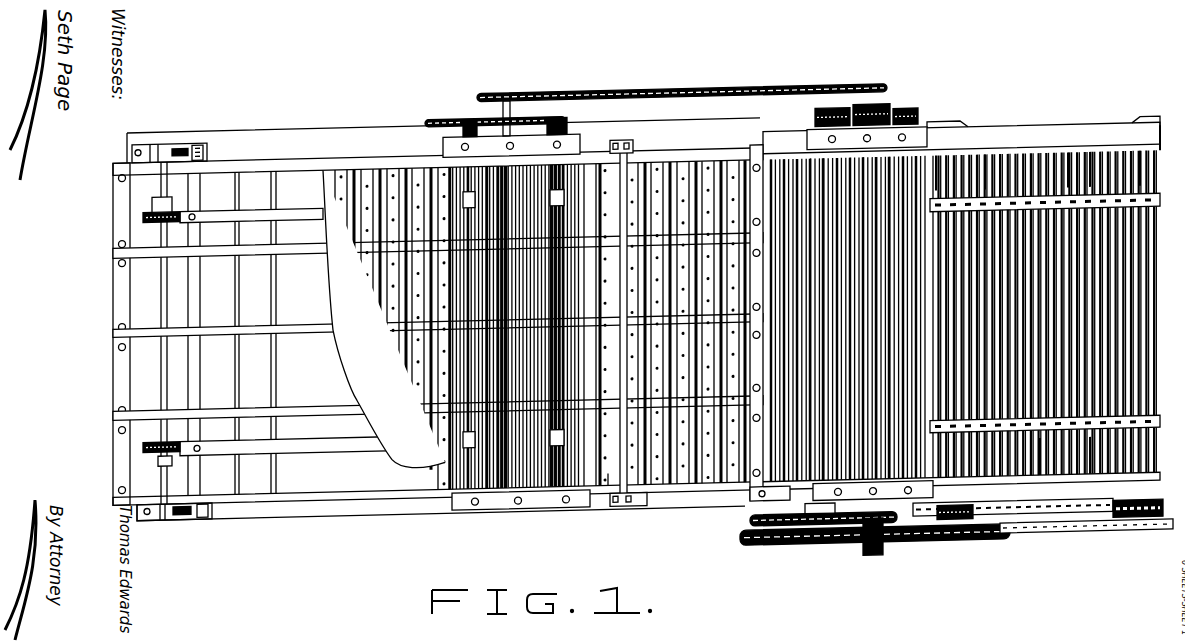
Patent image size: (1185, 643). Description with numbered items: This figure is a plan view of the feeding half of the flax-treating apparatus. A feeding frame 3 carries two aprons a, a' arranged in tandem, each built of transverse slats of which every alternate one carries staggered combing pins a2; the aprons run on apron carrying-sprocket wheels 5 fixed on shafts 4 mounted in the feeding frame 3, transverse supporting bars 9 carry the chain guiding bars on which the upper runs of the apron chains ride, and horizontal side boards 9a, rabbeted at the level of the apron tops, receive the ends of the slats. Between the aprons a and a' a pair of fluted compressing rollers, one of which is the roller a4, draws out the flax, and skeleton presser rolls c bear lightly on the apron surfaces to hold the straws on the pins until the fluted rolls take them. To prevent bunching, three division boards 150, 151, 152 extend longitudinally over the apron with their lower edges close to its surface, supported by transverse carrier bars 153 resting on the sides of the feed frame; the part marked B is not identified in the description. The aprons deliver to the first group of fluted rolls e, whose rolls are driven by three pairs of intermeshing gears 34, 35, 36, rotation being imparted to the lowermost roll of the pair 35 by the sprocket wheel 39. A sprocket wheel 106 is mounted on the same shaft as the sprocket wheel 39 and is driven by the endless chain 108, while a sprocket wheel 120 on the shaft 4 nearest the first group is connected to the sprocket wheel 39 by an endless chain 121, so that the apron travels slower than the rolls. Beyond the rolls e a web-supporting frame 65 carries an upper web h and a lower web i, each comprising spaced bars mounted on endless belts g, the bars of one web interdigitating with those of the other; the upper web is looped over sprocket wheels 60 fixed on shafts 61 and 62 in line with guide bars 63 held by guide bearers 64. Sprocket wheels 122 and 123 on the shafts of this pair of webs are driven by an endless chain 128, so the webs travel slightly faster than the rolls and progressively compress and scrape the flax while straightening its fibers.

The feeding frame 3 is at (203, 150).
The horizontal side boards 9a is at (305, 169).
The apron a is at (686, 279).
The apron a' is at (664, 291).
The combing pins a2 is at (400, 452).
The fluted compressing roller a4 is at (505, 502).
The skeleton presser roll c is at (450, 496).
The transverse carrier bars 153 is at (613, 170).
The sliding bar B is at (290, 216).
The division board 150 is at (298, 256).
The division board 151 is at (295, 330).
The division board 152 is at (300, 412).
The apron carrying-sprocket wheels 5 is at (140, 218).
The shaft 4 is at (163, 377).
The transverse supporting bars 9 is at (196, 298).
The pair of gears 34 is at (820, 125).
The pair of gears 35 is at (855, 122).
The pair of gears 36 is at (893, 137).
The first group of fluted rolls e is at (910, 164).
The shaft 61 is at (938, 170).
The sprocket wheels 60 is at (965, 170).
The guide bearers 64 is at (985, 169).
The upper web h is at (1033, 172).
The lower web i is at (1055, 172).
The guide bars 63 is at (1068, 173).
The endless belts g is at (1090, 174).
The web-supporting frame 65 is at (1140, 170).
The shaft 62 is at (1163, 155).
The sprocket wheel 120 is at (752, 542).
The endless chain 121 is at (822, 541).
The sprocket wheel 39 is at (866, 548).
The sprocket wheel 106 is at (930, 561).
The sprocket wheel 122 is at (985, 541).
The endless chain 128 is at (1038, 533).
The endless chain 108 is at (1053, 513).
The sprocket wheel 123 is at (1135, 541).